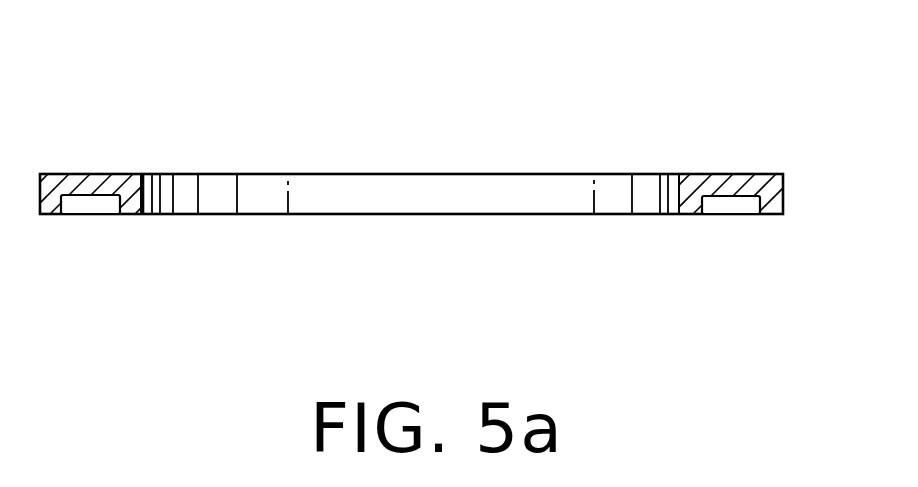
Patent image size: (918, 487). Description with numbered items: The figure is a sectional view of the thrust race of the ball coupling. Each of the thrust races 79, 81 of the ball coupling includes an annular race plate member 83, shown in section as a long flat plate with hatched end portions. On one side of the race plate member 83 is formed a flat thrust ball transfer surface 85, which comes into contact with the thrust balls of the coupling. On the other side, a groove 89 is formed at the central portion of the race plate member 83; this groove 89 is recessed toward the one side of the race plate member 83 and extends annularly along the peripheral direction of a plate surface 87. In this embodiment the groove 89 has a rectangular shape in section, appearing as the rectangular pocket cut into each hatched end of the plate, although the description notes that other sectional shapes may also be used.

The thrust race 79 is at (379, 128).
The thrust race 81 is at (402, 110).
The annular race plate member 83 is at (780, 175).
The flat thrust ball transfer surface 85 is at (93, 174).
The plate surface 87 is at (130, 214).
The groove 89 is at (90, 203).